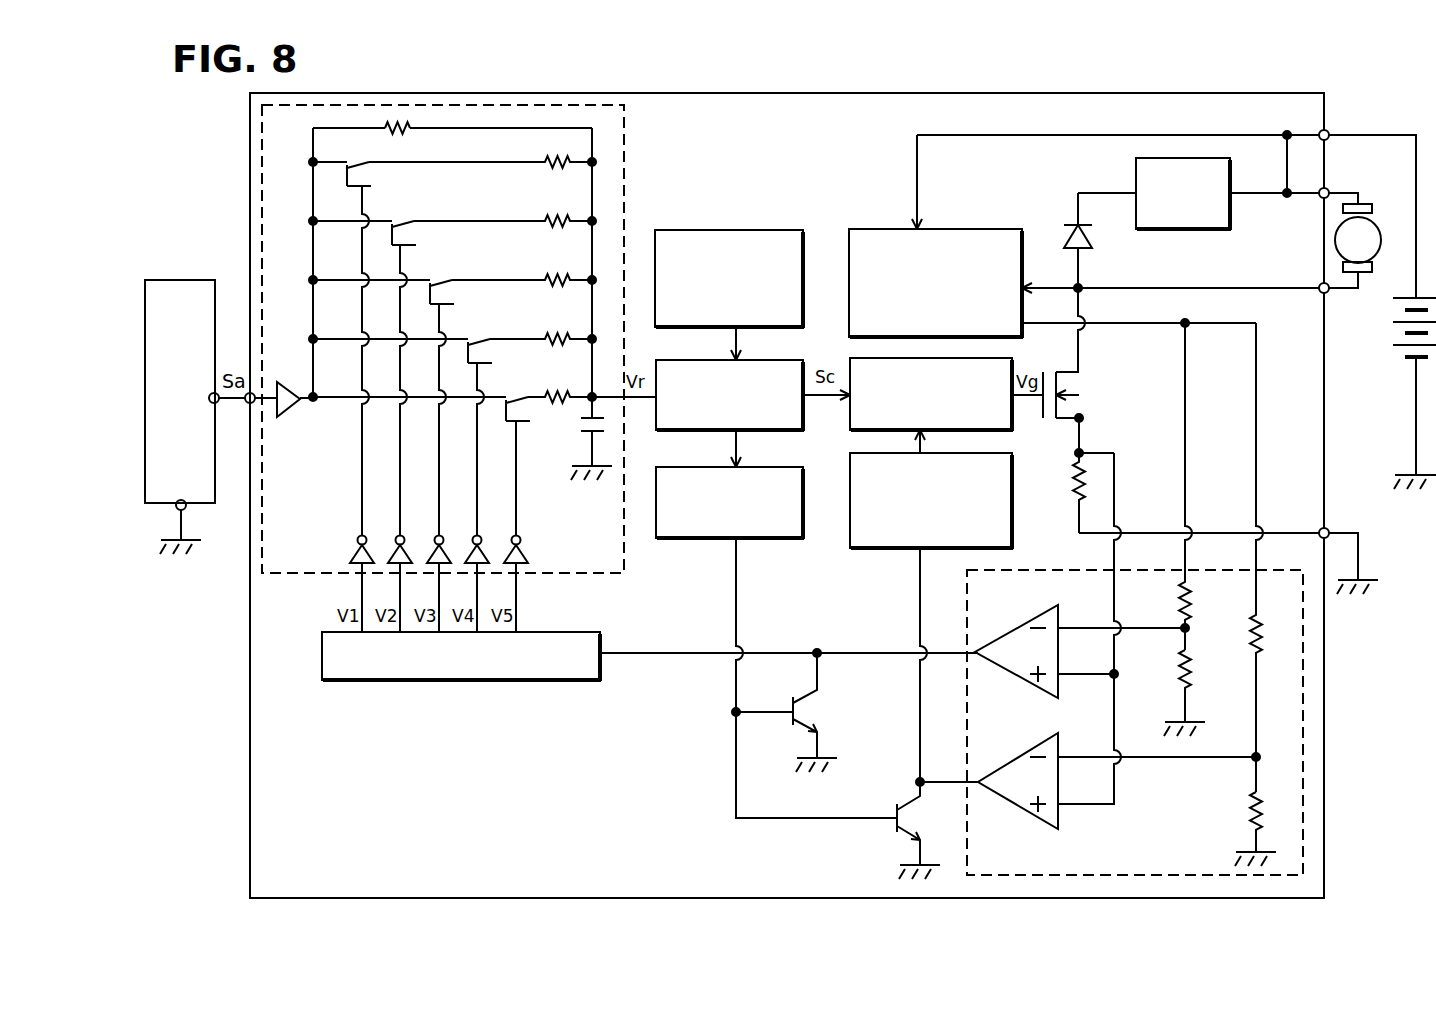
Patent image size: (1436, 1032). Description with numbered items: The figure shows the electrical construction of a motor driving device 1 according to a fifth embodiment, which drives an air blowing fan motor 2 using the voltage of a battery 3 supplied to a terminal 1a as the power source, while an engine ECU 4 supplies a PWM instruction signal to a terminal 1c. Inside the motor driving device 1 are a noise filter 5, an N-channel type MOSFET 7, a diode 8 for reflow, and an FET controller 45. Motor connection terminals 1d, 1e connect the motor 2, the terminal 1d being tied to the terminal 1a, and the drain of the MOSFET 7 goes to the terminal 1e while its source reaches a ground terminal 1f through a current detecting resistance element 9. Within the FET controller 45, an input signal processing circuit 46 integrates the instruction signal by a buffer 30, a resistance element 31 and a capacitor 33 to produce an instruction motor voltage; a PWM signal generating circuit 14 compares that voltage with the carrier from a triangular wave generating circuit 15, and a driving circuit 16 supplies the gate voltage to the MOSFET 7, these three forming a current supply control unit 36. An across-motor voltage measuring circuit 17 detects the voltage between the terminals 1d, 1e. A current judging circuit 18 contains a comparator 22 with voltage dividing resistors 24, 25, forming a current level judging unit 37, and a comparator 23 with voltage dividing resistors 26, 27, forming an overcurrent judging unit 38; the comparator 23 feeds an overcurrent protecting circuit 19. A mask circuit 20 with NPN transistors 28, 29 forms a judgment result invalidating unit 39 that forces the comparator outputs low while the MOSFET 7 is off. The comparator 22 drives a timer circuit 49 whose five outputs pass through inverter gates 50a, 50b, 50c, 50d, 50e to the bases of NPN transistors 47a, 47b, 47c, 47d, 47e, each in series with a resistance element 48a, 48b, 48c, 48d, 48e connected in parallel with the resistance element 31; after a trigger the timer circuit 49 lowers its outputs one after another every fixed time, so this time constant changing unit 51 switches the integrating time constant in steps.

The motor driving device 1 is at (700, 93).
The terminal 1a is at (1329, 131).
The terminal 1c is at (248, 404).
The terminal 1d is at (1329, 189).
The terminal 1e is at (1329, 292).
The terminal 1f is at (1329, 529).
The air blowing fan motor 2 is at (1376, 214).
The battery 3 is at (1393, 356).
The engine ECU 4 is at (200, 280).
The noise filter 5 is at (1183, 230).
The N-channel type MOSFET 7 is at (1072, 380).
The diode 8 is at (1086, 248).
The current detecting resistance element 9 is at (1073, 508).
The PWM signal generating circuit 14 is at (762, 360).
The triangular wave generating circuit 15 is at (760, 230).
The driving circuit 16 is at (1000, 358).
The across-motor voltage measuring circuit 17 is at (965, 229).
The current judging circuit 18 is at (1303, 723).
The overcurrent protecting circuit 19 is at (1000, 453).
The mask circuit 20 is at (762, 467).
The comparator 22 is at (1018, 677).
The comparator 23 is at (1020, 806).
The voltage dividing resistor 24 is at (1175, 592).
The voltage dividing resistor 25 is at (1175, 674).
The voltage dividing resistor 26 is at (1256, 620).
The voltage dividing resistor 27 is at (1258, 796).
The NPN transistor 28 is at (808, 712).
The NPN transistor 29 is at (905, 818).
The buffer 30 is at (290, 381).
The resistance element 31 is at (408, 134).
The capacitor 33 is at (606, 422).
The current supply control unit 36 is at (833, 445).
The current level judging unit 37 is at (1097, 616).
The overcurrent judging unit 38 is at (1136, 787).
The judgment result invalidating unit 39 is at (852, 631).
The FET controller 45 is at (682, 203).
The input signal processing circuit 46 is at (626, 112).
The NPN transistor 47a is at (372, 180).
The NPN transistor 47b is at (417, 239).
The NPN transistor 47c is at (455, 298).
The NPN transistor 47d is at (487, 357).
The NPN transistor 47e is at (521, 419).
The resistance element 48a is at (546, 166).
The resistance element 48b is at (546, 225).
The resistance element 48c is at (546, 284).
The resistance element 48d is at (546, 343).
The resistance element 48e is at (593, 384).
The timer circuit 49 is at (590, 632).
The inverter gate 50a is at (380, 522).
The inverter gate 50b is at (418, 522).
The inverter gate 50c is at (457, 522).
The inverter gate 50d is at (495, 522).
The inverter gate 50e is at (534, 522).
The time constant changing unit 51 is at (331, 441).